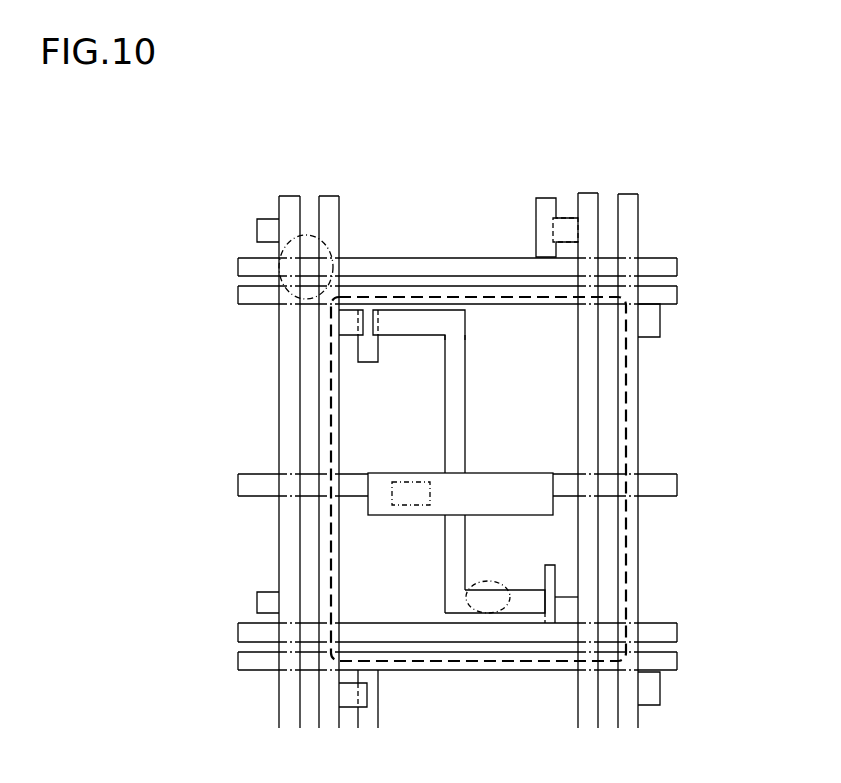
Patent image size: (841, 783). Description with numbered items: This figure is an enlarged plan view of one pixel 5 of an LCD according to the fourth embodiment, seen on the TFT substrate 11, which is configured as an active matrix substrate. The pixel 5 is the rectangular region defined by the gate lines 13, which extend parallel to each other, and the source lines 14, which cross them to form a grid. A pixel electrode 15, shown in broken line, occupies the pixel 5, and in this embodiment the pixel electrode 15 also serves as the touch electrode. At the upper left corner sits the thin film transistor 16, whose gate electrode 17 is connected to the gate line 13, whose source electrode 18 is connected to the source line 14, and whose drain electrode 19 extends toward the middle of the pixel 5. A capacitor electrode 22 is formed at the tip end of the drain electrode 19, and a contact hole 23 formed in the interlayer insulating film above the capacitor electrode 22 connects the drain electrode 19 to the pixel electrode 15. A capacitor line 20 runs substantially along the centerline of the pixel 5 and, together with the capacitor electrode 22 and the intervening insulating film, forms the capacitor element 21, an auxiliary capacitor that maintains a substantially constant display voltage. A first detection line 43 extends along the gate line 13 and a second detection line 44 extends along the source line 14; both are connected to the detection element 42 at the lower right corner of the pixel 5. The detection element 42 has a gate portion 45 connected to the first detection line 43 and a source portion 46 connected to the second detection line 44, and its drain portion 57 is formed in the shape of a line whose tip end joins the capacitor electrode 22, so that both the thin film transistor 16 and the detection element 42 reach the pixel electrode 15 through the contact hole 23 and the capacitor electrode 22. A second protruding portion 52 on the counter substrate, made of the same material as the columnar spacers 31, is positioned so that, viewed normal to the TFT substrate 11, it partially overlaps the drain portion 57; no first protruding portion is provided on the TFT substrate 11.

The TFT substrate 11 is at (155, 176).
The second detection line 44 is at (291, 205).
The source line 14 is at (330, 208).
The first detection line 43 is at (238, 266).
The gate line 13 is at (238, 296).
The capacitor line 20 is at (258, 473).
The pixel electrode 15 is at (627, 398).
The columnar spacer 31 is at (284, 242).
The source electrode 18 is at (358, 310).
The gate electrode 17 is at (371, 363).
The drain electrode 19 is at (399, 310).
The thin film transistor 16 is at (466, 333).
The capacitor electrode 22 is at (533, 472).
The contact hole 23 is at (424, 508).
The drain portion 57 is at (515, 603).
The gate portion 45 is at (548, 566).
The source portion 46 is at (568, 598).
The detection element 42 is at (548, 623).
The second protruding portion 52 is at (470, 614).
The pixel 5 is at (484, 310).
The capacitor element 21 is at (478, 444).